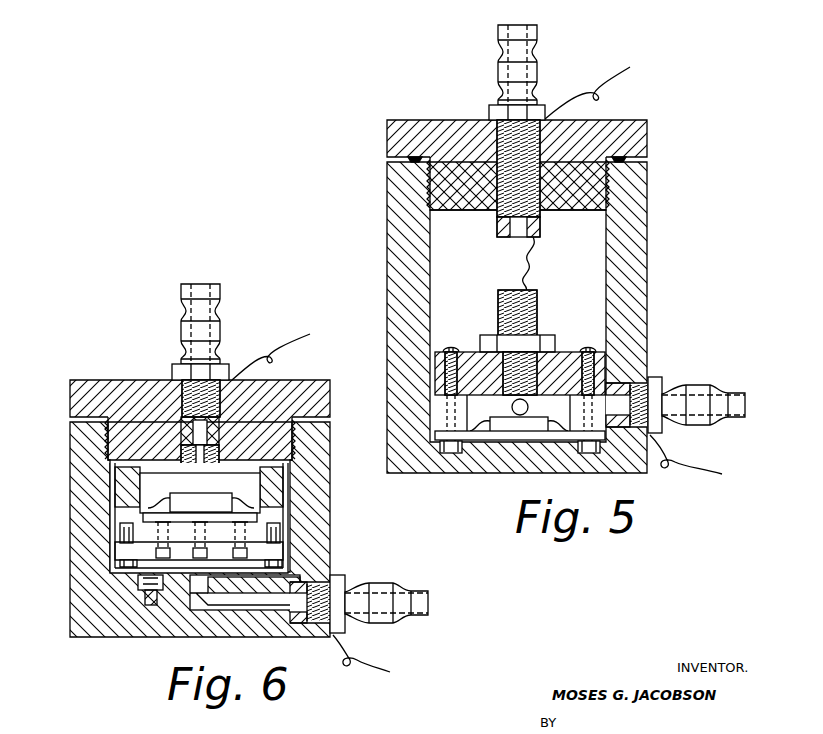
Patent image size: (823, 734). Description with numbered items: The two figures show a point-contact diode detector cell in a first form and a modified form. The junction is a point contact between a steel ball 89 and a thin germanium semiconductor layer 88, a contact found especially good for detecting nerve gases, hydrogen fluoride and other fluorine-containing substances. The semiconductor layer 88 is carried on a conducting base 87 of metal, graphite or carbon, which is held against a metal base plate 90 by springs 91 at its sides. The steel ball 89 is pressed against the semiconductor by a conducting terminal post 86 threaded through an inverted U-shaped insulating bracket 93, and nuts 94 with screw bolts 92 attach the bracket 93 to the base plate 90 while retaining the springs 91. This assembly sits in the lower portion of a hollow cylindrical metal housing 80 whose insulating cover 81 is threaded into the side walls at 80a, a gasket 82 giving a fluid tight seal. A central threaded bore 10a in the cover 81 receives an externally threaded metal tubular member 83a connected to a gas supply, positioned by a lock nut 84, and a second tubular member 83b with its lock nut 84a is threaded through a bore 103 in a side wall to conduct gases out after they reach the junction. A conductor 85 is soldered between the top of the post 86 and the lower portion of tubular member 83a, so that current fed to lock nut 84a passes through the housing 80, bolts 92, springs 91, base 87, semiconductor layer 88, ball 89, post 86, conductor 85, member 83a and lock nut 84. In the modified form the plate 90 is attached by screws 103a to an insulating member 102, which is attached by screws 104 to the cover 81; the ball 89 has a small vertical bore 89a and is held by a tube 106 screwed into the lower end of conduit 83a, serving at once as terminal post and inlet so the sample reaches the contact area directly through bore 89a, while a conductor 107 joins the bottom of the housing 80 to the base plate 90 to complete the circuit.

In FIG. 5, the central threaded bore 10a is at (492, 158).
In FIG. 5, the housing 80 is at (650, 223).
In FIG. 6, the housing 80 is at (76, 449).
In FIG. 5, the threaded connection 80a is at (612, 182).
In FIG. 5, the cover 81 is at (647, 124).
In FIG. 6, the cover 81 is at (306, 384).
In FIG. 5, the gasket 82 is at (628, 158).
In FIG. 5, the tubular member 83a is at (540, 70).
In FIG. 6, the tubular member 83a is at (222, 326).
In FIG. 5, the second tubular member 83b is at (740, 386).
In FIG. 6, the second tubular member 83b is at (388, 584).
In FIG. 5, the lock nut 84 is at (545, 110).
In FIG. 5, the lock nut 84a is at (661, 380).
In FIG. 6, the lock nut 84a is at (337, 604).
In FIG. 5, the conductor 85 is at (536, 260).
In FIG. 5, the conducting terminal post 86 is at (538, 312).
In FIG. 5, the conducting base 87 is at (507, 433).
In FIG. 6, the conducting base 87 is at (233, 504).
In FIG. 5, the semiconductor layer 88 is at (510, 402).
In FIG. 6, the semiconductor layer 88 is at (167, 508).
In FIG. 5, the steel ball 89 is at (528, 404).
In FIG. 6, the steel ball 89 is at (208, 491).
In FIG. 6, the vertical bore 89a is at (194, 487).
In FIG. 5, the base plate 90 is at (530, 441).
In FIG. 6, the base plate 90 is at (258, 519).
In FIG. 5, the springs 91 is at (491, 431).
In FIG. 6, the springs 91 is at (122, 527).
In FIG. 5, the screw bolts 92 is at (466, 333).
In FIG. 5, the bracket 93 is at (557, 360).
In FIG. 5, the nuts 94 is at (445, 440).
In FIG. 6, the insulating member 102 is at (110, 571).
In FIG. 5, the threaded bore 103 is at (624, 384).
In FIG. 6, the screws 103a is at (205, 570).
In FIG. 6, the screws 104 is at (117, 548).
In FIG. 6, the tube 106 is at (112, 462).
In FIG. 6, the conductor 107 is at (184, 528).